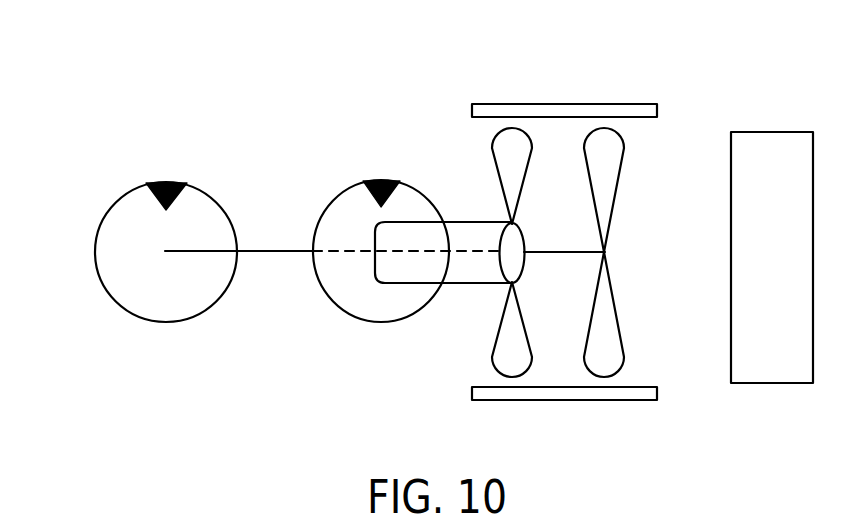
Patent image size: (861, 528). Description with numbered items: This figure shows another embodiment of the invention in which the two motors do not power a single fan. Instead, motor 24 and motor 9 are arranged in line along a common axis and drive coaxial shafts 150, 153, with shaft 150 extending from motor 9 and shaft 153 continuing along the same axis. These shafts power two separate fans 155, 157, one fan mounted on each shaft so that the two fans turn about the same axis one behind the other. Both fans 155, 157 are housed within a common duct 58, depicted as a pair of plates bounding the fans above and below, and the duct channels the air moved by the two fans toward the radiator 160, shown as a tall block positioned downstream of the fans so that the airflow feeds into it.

The motor 24 is at (100, 221).
The motor 9 is at (337, 197).
The coaxial shaft 150 is at (457, 284).
The coaxial shaft 153 is at (565, 255).
The common duct 58 is at (590, 104).
The fan 155 is at (513, 378).
The fan 157 is at (605, 378).
The radiator 160 is at (793, 255).